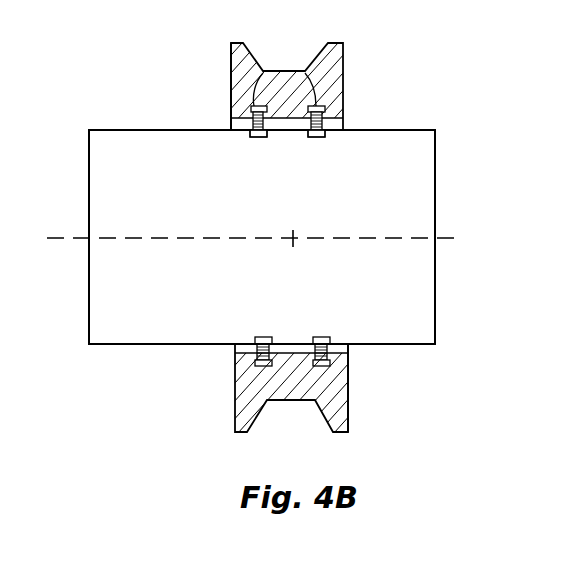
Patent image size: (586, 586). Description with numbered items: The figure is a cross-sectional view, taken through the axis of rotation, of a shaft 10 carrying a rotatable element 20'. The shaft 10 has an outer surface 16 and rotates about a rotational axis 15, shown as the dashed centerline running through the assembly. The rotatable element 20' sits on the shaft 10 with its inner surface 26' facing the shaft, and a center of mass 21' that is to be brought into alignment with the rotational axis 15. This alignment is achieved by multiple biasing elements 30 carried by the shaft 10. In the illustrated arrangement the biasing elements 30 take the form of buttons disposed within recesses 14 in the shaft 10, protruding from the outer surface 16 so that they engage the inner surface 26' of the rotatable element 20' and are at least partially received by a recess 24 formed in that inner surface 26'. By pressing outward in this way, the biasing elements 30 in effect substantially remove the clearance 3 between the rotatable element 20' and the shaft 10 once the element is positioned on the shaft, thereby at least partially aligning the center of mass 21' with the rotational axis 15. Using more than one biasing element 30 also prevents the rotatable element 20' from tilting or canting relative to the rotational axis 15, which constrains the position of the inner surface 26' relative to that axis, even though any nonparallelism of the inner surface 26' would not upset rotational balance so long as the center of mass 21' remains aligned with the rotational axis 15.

The shaft 10 is at (101, 137).
The outer surface of the shaft 16 is at (143, 131).
The rotational axis 15 is at (65, 240).
The center of mass 21' is at (251, 216).
The rotatable element 20' is at (293, 83).
The recess 24 is at (293, 71).
The inner surface of the rotatable element 26' is at (300, 237).
The biasing elements 30 is at (250, 128).
The recesses 14 is at (313, 137).
The clearance 3 is at (243, 353).